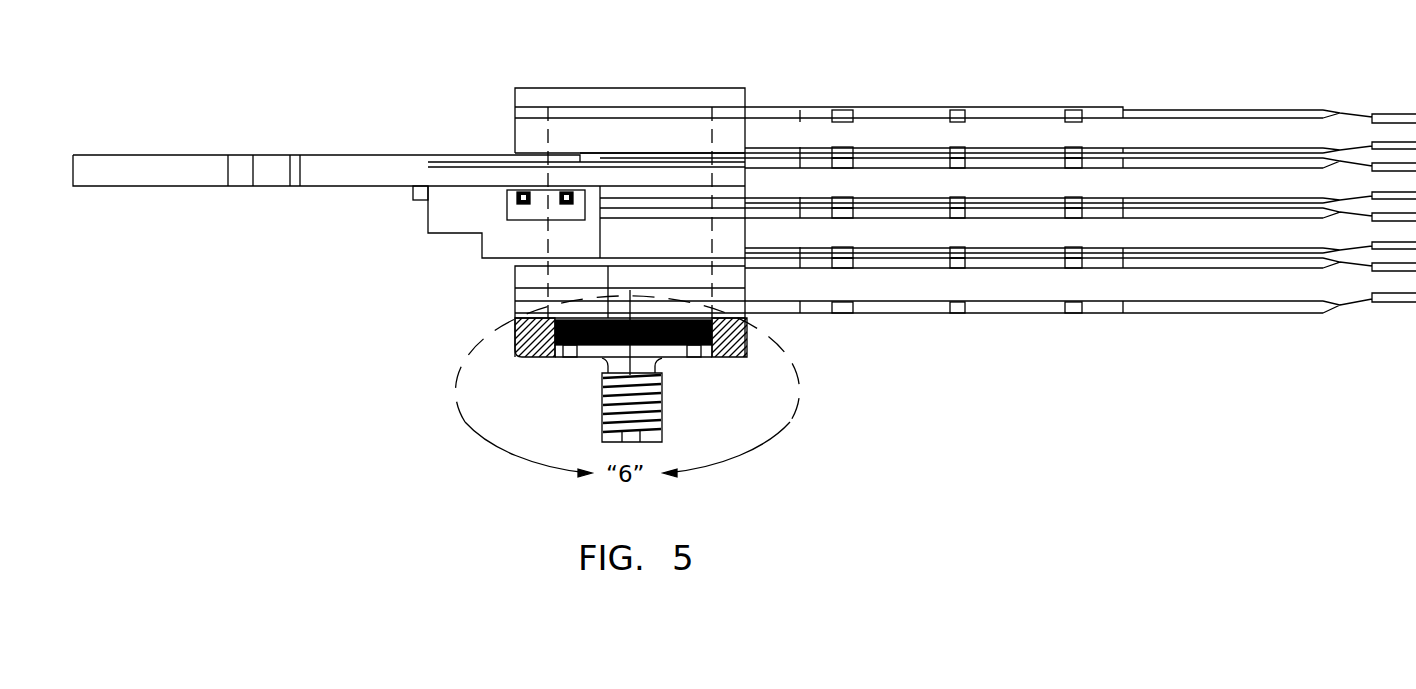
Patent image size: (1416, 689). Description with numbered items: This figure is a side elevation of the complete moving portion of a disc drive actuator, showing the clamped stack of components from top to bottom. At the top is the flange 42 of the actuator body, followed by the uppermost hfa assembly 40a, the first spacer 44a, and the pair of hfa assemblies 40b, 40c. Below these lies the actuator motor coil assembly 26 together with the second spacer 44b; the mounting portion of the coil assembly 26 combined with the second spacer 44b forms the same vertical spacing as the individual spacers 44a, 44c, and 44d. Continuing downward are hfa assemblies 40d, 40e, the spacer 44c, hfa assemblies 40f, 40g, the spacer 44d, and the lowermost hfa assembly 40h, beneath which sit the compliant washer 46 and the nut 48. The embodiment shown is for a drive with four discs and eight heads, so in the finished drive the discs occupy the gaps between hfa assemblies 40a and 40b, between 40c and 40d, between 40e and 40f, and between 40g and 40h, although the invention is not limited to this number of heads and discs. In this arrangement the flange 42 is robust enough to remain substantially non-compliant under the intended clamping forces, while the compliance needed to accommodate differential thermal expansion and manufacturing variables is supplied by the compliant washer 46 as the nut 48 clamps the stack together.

The actuator motor coil assembly 26 is at (355, 158).
The flange 42 is at (545, 88).
The first spacer 44a is at (532, 140).
The second spacer 44b is at (623, 192).
The spacer 44c is at (515, 337).
The spacer 44d is at (743, 313).
The compliant washer 46 is at (745, 315).
The nut 48 is at (730, 355).
The uppermost hfa assembly 40a is at (517, 110).
The hfa assembly 40b is at (645, 153).
The hfa assembly 40c is at (677, 162).
The hfa assembly 40d is at (643, 208).
The hfa assembly 40e is at (650, 243).
The hfa assembly 40f is at (733, 253).
The hfa assembly 40g is at (712, 266).
The lowermost hfa assembly 40h is at (710, 288).